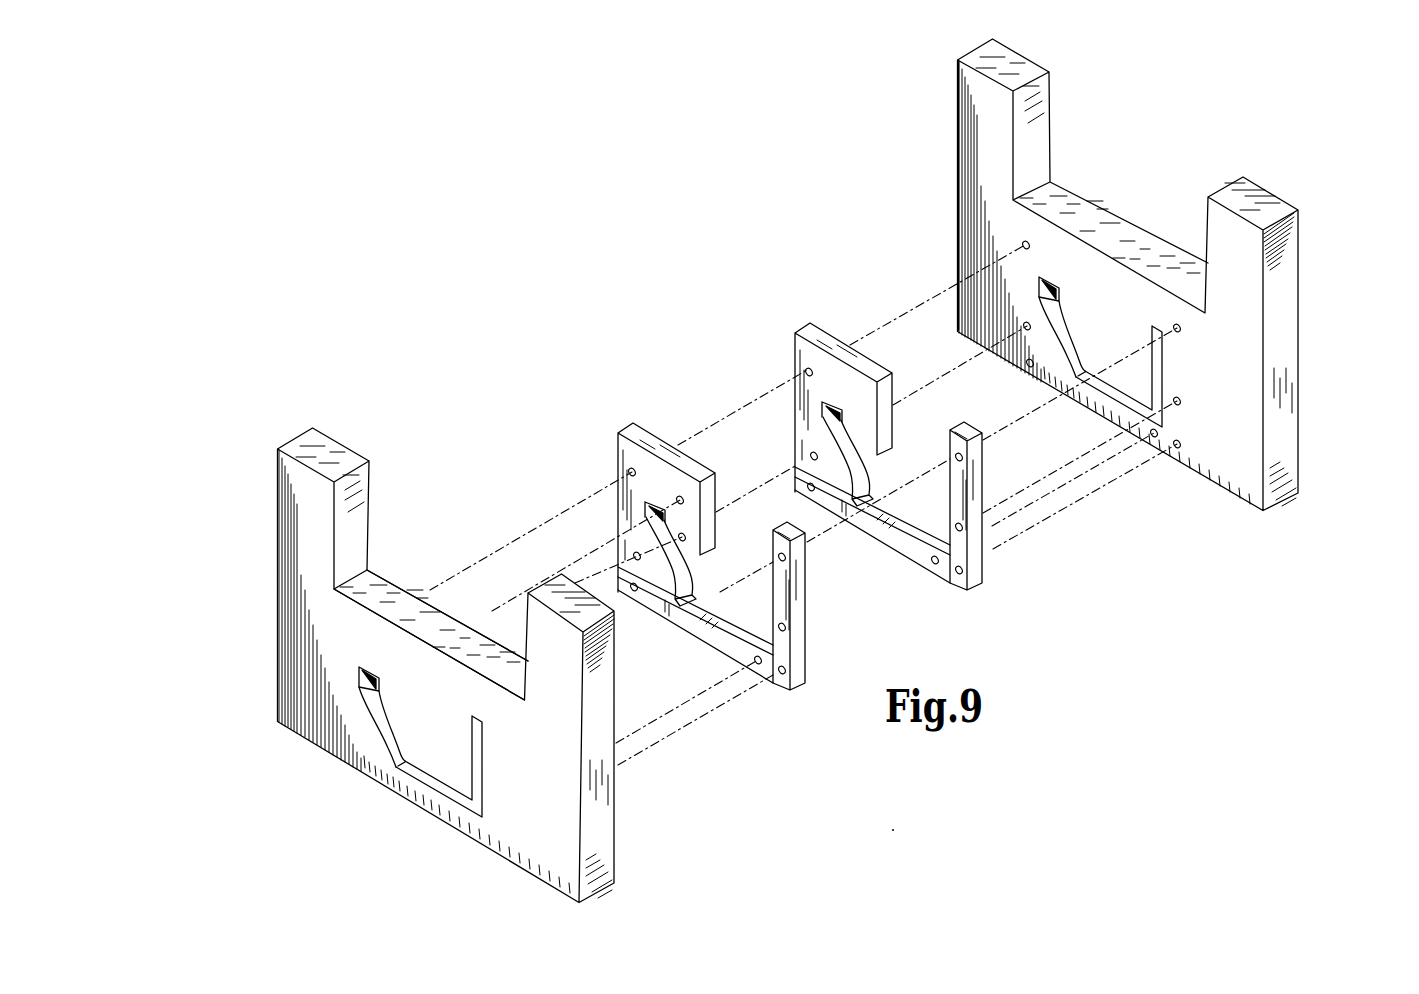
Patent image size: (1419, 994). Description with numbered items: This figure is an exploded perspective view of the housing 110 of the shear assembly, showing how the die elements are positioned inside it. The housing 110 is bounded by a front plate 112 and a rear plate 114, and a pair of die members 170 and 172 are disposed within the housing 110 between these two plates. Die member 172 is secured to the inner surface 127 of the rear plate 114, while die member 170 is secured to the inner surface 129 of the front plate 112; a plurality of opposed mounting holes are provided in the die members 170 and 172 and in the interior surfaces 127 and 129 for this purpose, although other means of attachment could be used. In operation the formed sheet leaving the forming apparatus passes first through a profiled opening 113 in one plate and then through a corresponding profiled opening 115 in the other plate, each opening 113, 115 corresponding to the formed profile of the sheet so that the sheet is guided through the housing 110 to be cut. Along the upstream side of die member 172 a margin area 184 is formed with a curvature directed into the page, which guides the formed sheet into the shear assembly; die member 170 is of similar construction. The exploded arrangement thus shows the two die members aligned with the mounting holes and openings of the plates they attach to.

The housing 110 is at (587, 252).
The front plate 112 is at (312, 561).
The profiled opening 113 is at (392, 772).
The rear plate 114 is at (1299, 303).
The profiled opening 115 is at (1128, 414).
The inner surface 127 is at (990, 166).
The inner surface 129 is at (396, 587).
The die member 170 is at (625, 452).
The die member 172 is at (805, 378).
The margin area 184 is at (883, 503).